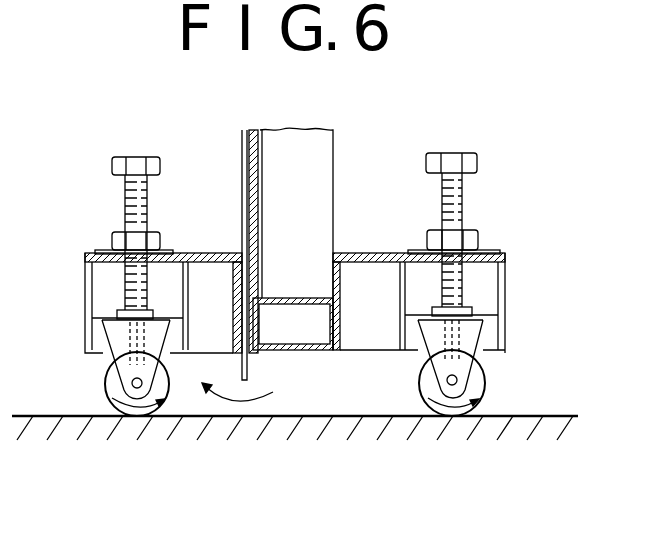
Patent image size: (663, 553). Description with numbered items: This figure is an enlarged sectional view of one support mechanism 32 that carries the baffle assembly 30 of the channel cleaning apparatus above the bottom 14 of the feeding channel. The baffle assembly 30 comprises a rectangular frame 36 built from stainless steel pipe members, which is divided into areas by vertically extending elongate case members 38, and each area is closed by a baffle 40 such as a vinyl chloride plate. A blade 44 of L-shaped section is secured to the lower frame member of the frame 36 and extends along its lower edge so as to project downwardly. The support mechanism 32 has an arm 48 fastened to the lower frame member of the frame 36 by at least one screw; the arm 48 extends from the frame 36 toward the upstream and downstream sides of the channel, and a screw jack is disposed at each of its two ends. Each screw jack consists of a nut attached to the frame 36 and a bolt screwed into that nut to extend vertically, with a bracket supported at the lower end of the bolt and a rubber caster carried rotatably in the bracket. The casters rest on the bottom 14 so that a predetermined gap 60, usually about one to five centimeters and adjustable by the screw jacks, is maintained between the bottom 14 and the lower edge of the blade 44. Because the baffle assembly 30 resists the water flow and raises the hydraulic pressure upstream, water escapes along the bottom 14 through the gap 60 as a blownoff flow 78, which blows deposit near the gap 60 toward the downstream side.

The bottom 14 is at (334, 417).
The baffle assembly 30 is at (339, 137).
The support mechanism 32 is at (512, 256).
The frame 36 is at (291, 299).
The case member 38 is at (248, 140).
The baffle 40 is at (250, 185).
The blade 44 is at (225, 372).
The arm 48 is at (370, 253).
The gap 60 is at (243, 408).
The blownoff flow 78 is at (222, 400).